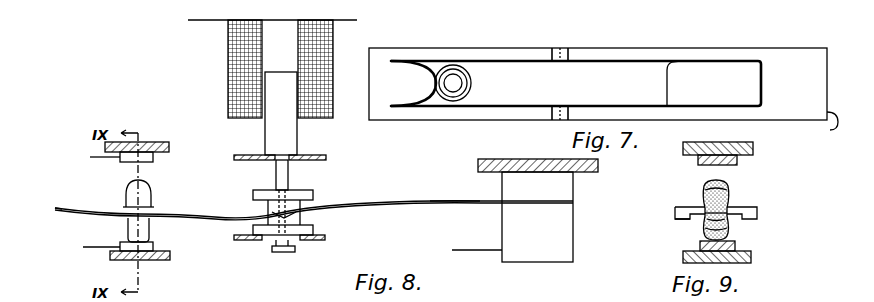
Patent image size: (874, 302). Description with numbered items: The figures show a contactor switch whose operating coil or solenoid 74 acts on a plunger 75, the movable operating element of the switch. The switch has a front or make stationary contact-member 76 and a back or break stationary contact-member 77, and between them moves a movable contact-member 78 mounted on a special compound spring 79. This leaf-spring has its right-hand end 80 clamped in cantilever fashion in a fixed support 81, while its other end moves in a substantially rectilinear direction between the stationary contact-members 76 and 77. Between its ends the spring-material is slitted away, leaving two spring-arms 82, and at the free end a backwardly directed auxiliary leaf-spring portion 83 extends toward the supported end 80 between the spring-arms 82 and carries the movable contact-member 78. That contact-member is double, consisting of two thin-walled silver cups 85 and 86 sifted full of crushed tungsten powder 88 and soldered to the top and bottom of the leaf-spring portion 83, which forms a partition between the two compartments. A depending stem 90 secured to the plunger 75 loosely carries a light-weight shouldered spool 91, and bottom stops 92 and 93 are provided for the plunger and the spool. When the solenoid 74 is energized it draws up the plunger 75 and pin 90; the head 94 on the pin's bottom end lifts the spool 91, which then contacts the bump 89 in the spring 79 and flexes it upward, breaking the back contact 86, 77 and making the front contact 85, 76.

In FIG. 8, the operating coil or solenoid 74 is at (333, 72).
In FIG. 8, the plunger 75 is at (292, 139).
In FIG. 8, the front or make stationary contact-member 76 is at (153, 158).
In FIG. 9, the front or make stationary contact-member 76 is at (737, 162).
In FIG. 8, the back or break stationary contact-member 77 is at (122, 260).
In FIG. 9, the back or break stationary contact-member 77 is at (735, 247).
In FIG. 7, the movable contact-member 78 is at (469, 89).
In FIG. 8, the movable contact-member 78 is at (174, 186).
In FIG. 9, the movable contact-member 78 is at (762, 189).
In FIG. 7, the compound spring 79 is at (534, 36).
In FIG. 8, the compound spring 79 is at (186, 213).
In FIG. 9, the compound spring 79 is at (678, 207).
In FIG. 7, the right-hand end 80 is at (830, 126).
In FIG. 8, the right-hand end 80 is at (558, 198).
In FIG. 8, the fixed support 81 is at (567, 226).
In FIG. 7, the spring-arms 82 is at (668, 66).
In FIG. 8, the spring-arms 82 is at (433, 200).
In FIG. 9, the spring-arms 82 is at (675, 221).
In FIG. 7, the auxiliary leaf-spring portion 83 is at (470, 76).
In FIG. 8, the auxiliary leaf-spring portion 83 is at (152, 211).
In FIG. 9, the auxiliary leaf-spring portion 83 is at (737, 211).
In FIG. 7, the silver cup 85 is at (437, 76).
In FIG. 8, the silver cup 85 is at (126, 193).
In FIG. 9, the silver cup 85 is at (706, 187).
In FIG. 8, the silver cup 86 is at (147, 229).
In FIG. 9, the silver cup 86 is at (705, 226).
In FIG. 9, the crushed tungsten powder 88 is at (730, 228).
In FIG. 8, the bump 89 is at (272, 217).
In FIG. 8, the depending stem 90 is at (288, 175).
In FIG. 8, the shouldered spool 91 is at (313, 195).
In FIG. 8, the bottom stop 92 is at (327, 157).
In FIG. 8, the bottom stop 93 is at (322, 238).
In FIG. 8, the head 94 is at (272, 251).